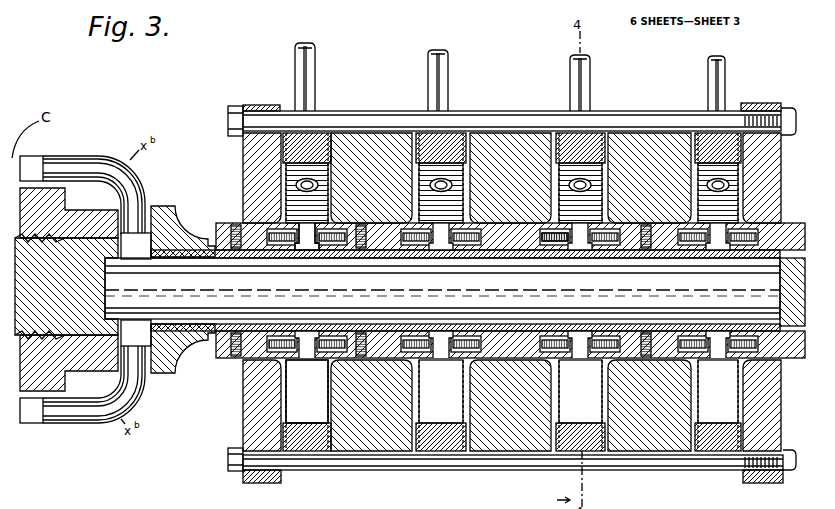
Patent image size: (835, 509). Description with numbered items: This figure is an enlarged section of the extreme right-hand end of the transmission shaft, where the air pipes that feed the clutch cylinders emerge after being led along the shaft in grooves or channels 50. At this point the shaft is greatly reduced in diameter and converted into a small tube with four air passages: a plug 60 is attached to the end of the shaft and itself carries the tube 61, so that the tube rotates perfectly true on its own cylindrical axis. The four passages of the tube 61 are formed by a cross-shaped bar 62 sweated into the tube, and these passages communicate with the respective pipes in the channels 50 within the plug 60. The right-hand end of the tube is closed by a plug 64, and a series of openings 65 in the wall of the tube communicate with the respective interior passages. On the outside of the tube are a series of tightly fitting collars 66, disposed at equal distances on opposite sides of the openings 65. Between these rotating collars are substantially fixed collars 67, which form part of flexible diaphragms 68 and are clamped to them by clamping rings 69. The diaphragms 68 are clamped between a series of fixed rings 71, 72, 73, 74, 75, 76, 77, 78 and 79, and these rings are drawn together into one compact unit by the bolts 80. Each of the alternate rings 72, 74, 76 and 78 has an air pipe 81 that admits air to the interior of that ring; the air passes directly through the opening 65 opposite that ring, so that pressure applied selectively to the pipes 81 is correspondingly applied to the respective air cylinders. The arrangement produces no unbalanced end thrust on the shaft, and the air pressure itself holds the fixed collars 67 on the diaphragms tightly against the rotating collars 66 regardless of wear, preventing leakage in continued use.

The grooves or channels 50 is at (25, 152).
The plug 60 is at (158, 200).
The tube 61 is at (195, 240).
The cross-shaped bar 62 is at (442, 288).
The plug 64 is at (772, 291).
The openings 65 is at (302, 244).
The collars 66 is at (208, 347).
The fixed collars 67 is at (588, 200).
The diaphragms 68 is at (320, 393).
The clamping rings 69 is at (297, 216).
The fixed ring 71 is at (243, 97).
The fixed ring 72 is at (312, 130).
The fixed ring 73 is at (373, 133).
The fixed ring 74 is at (445, 130).
The fixed ring 75 is at (499, 133).
The fixed ring 76 is at (586, 130).
The fixed ring 77 is at (645, 136).
The fixed ring 78 is at (711, 133).
The fixed ring 79 is at (755, 98).
The bolts 80 is at (546, 103).
The air pipe 81 is at (307, 63).